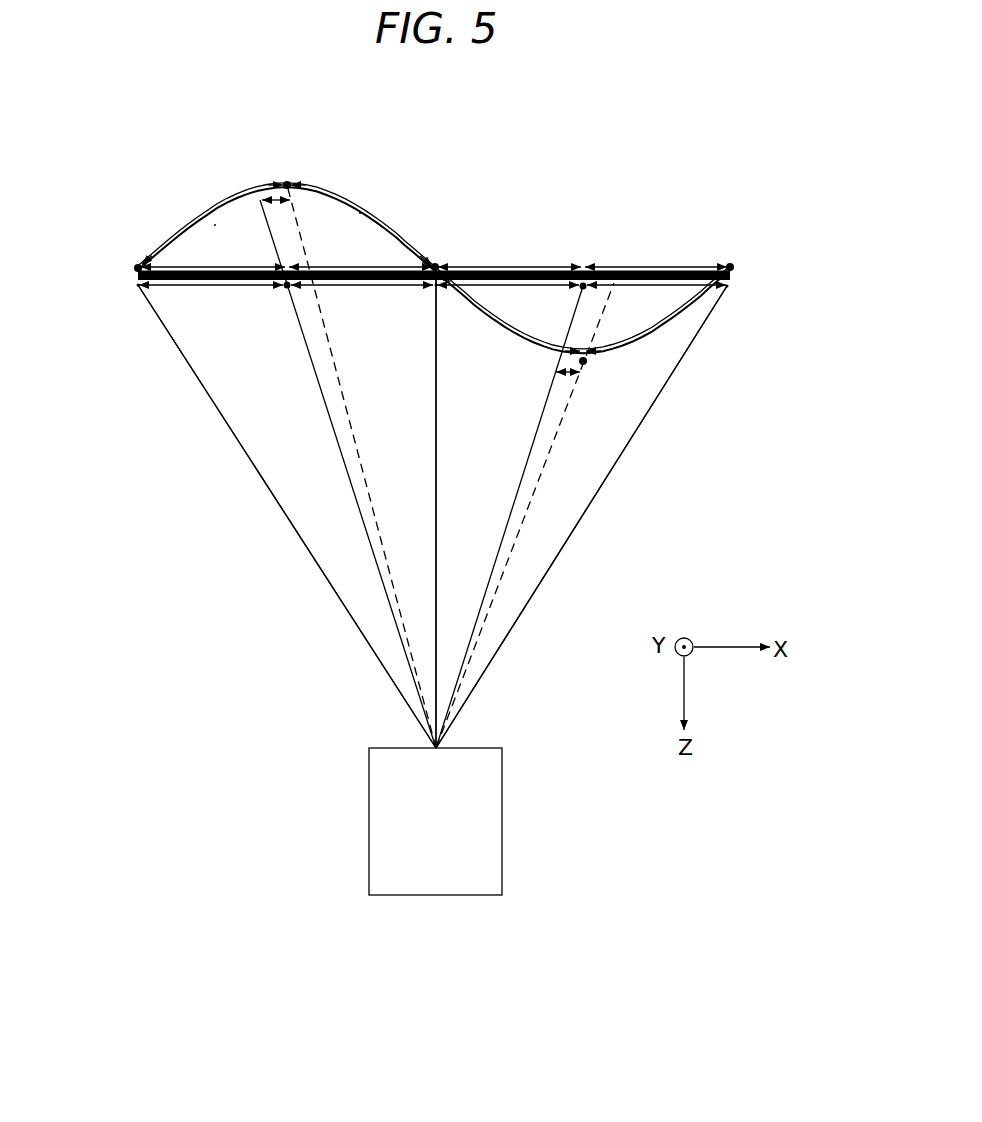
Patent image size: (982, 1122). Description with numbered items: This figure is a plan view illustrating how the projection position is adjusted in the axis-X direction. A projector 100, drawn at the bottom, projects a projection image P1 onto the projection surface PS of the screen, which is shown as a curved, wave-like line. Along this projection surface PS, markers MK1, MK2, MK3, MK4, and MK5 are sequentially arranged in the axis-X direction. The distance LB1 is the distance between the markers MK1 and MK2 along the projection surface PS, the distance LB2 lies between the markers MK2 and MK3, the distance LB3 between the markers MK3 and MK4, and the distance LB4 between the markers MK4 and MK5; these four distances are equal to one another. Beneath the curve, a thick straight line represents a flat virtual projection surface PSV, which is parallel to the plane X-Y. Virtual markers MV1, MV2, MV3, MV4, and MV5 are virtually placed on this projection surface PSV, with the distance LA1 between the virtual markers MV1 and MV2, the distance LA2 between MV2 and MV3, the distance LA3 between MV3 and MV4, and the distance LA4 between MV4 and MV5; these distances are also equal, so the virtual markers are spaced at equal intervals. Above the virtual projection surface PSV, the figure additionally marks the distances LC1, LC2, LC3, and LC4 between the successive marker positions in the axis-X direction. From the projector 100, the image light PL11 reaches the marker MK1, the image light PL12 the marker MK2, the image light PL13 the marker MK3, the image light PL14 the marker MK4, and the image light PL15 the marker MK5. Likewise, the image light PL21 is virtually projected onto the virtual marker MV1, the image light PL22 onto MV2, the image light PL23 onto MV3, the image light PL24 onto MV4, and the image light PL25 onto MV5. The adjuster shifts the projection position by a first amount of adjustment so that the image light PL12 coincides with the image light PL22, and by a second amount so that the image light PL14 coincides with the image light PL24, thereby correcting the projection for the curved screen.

The marker MK1 is at (136, 264).
The marker MK2 is at (289, 182).
The marker MK3 is at (437, 265).
The marker MK4 is at (584, 364).
The marker MK5 is at (731, 266).
The virtual marker MV1 is at (136, 287).
The virtual marker MV2 is at (287, 289).
The virtual marker MV3 is at (434, 288).
The virtual marker MV4 is at (584, 283).
The virtual marker MV5 is at (728, 288).
The distance LB1 is at (212, 226).
The distance LB2 is at (361, 227).
The distance LB3 is at (500, 322).
The distance LB4 is at (620, 349).
The first chord length LC1 is at (213, 254).
The second chord length LC2 is at (360, 254).
The third chord length LC3 is at (509, 258).
The fourth chord length LC4 is at (656, 258).
The distance LA1 is at (211, 300).
The distance LA2 is at (362, 300).
The distance LA3 is at (508, 300).
The distance LA4 is at (656, 300).
The image light PL11 is at (317, 558).
The image light PL21 is at (287, 516).
The image light PL12 is at (358, 458).
The image light PL22 is at (330, 422).
The image light PL13 is at (437, 437).
The image light PL23 is at (475, 508).
The image light PL14 is at (543, 467).
The image light PL24 is at (505, 533).
The image light PL15 is at (570, 533).
The image light PL25 is at (581, 517).
The projection image P1 is at (218, 226).
The projection surface PS is at (360, 213).
The virtual projection surface PSV is at (180, 279).
The projector 100 is at (503, 822).